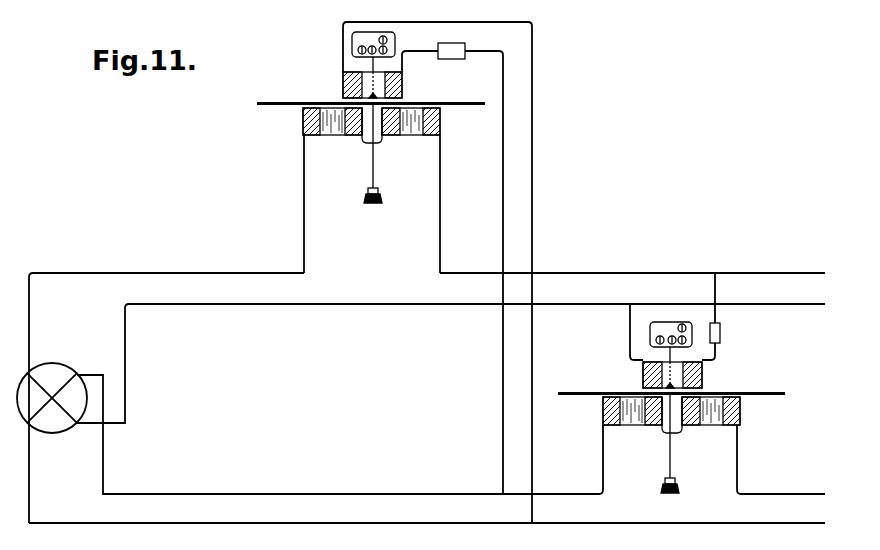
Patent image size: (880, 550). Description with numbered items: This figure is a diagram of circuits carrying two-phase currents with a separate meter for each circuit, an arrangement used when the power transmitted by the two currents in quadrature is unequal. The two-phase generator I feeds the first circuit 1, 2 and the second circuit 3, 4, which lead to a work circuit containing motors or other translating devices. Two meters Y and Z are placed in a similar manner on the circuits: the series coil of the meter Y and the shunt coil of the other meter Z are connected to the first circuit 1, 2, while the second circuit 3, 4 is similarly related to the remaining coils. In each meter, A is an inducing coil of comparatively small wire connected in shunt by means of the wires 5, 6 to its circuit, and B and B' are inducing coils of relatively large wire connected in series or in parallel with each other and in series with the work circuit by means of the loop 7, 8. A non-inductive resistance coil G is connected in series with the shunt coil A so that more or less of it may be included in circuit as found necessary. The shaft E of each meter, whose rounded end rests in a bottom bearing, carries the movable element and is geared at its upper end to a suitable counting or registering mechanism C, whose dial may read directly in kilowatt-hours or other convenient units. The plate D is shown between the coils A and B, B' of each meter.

The work circuit wire 1 is at (194, 273).
The work circuit wire 2 is at (250, 306).
The circuit wire 3 is at (392, 493).
The circuit wire 4 is at (436, 523).
The shunt wire 5 is at (503, 187).
The shunt wire 6 is at (536, 177).
The loop wire 7 is at (295, 204).
The loop wire 8 is at (448, 204).
The two-phase generator I is at (52, 389).
The meter Y is at (413, 50).
The meter Z is at (645, 320).
The inducing coil A is at (343, 80).
The inducing coil B is at (482, 270).
The inducing coil B' is at (574, 267).
The counting or registering mechanism C is at (397, 52).
The plate D is at (301, 103).
The shaft E is at (373, 164).
The non-inductive resistance coil G is at (452, 59).